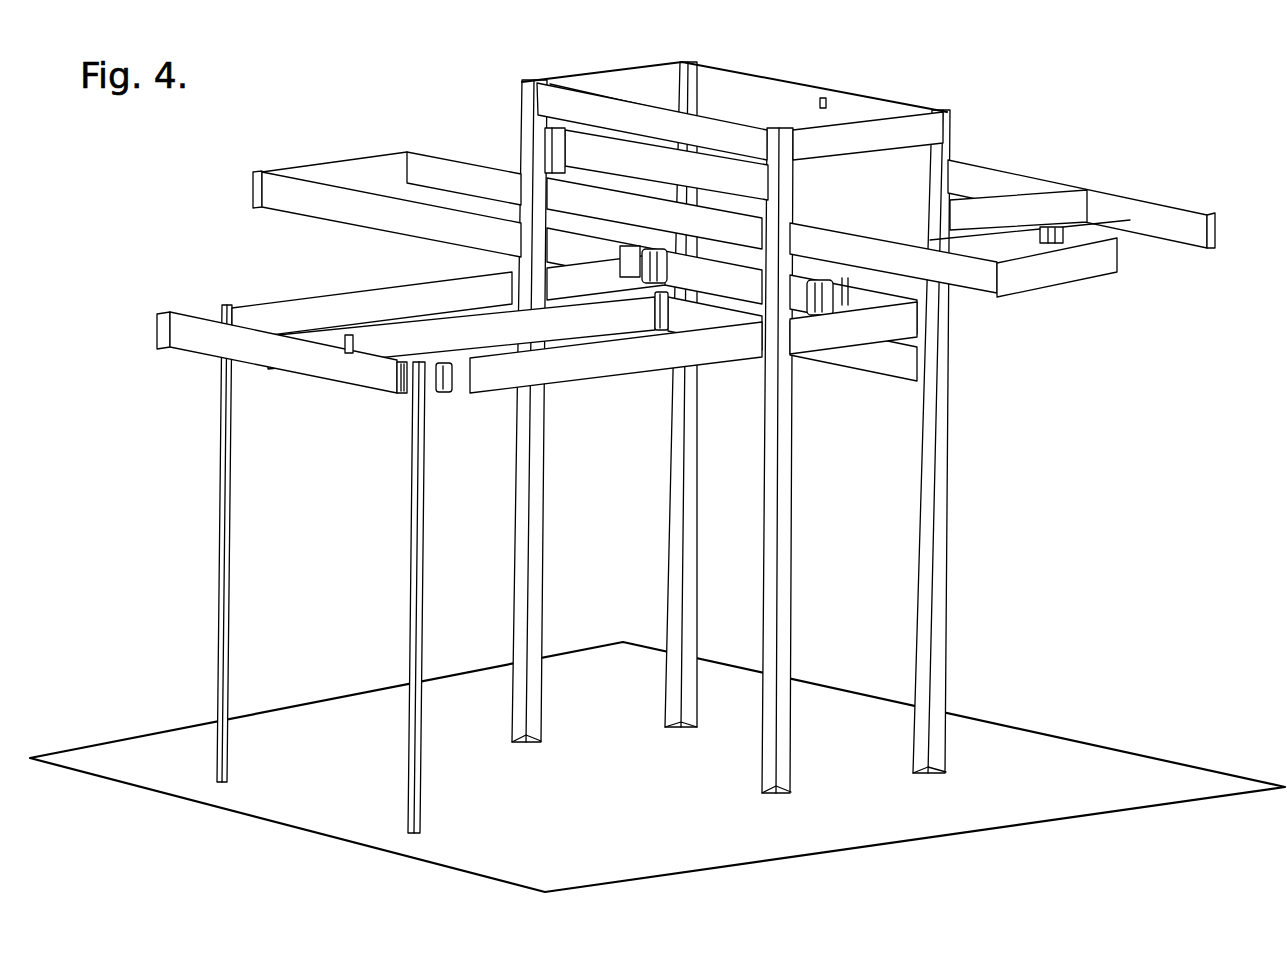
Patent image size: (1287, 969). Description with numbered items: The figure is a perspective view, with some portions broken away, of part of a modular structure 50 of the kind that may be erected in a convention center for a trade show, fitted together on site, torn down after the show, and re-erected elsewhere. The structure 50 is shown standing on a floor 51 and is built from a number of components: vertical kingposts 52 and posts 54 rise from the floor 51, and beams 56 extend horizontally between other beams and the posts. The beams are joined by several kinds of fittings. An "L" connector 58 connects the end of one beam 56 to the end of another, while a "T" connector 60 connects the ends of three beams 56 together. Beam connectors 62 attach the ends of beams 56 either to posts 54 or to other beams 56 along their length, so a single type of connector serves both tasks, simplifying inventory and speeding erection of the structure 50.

The modular structure 50 is at (1030, 421).
The floor 51 is at (1068, 752).
The vertical kingposts 52 is at (667, 538).
The posts 54 is at (218, 508).
The beams 56 is at (400, 300).
The "L" connector 58 is at (1215, 226).
The "T" connector 60 is at (641, 250).
The beam connector 62 is at (823, 105).